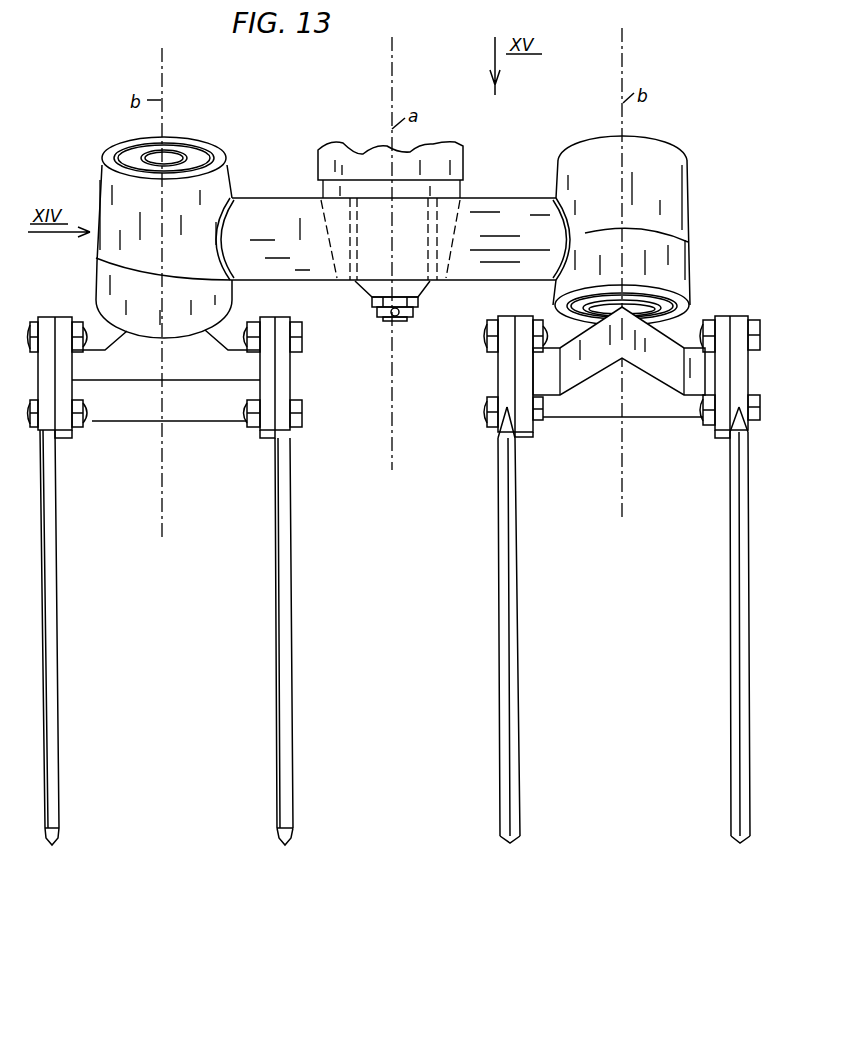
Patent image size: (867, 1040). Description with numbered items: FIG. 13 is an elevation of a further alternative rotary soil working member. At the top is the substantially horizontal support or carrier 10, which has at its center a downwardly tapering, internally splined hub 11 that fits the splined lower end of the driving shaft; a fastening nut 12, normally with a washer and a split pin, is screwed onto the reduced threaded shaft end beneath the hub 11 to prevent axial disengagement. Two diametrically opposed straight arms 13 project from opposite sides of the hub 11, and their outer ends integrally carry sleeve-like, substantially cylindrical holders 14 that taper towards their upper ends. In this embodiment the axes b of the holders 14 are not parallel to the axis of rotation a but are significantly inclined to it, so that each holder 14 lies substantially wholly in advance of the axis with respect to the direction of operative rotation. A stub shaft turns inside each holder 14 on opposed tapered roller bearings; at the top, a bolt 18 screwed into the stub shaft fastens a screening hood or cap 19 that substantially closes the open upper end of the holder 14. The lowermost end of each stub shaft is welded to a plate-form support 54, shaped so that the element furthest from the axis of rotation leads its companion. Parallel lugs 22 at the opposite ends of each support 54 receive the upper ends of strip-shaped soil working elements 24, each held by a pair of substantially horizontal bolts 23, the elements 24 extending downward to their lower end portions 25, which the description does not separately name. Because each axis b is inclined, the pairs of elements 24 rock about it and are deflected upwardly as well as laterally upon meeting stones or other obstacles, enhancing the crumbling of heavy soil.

The support or carrier 10 is at (306, 190).
The hub 11 is at (458, 189).
The fastening nut 12 is at (405, 314).
The arm 13 is at (313, 281).
The holder 14 is at (110, 152).
The bolt 18 is at (170, 156).
The screening hood or cap 19 is at (203, 153).
The lug 22 is at (63, 317).
The bolt 23 is at (78, 400).
The soil working element 24 is at (56, 588).
The leg tip 25 is at (52, 847).
The support 54 is at (190, 421).